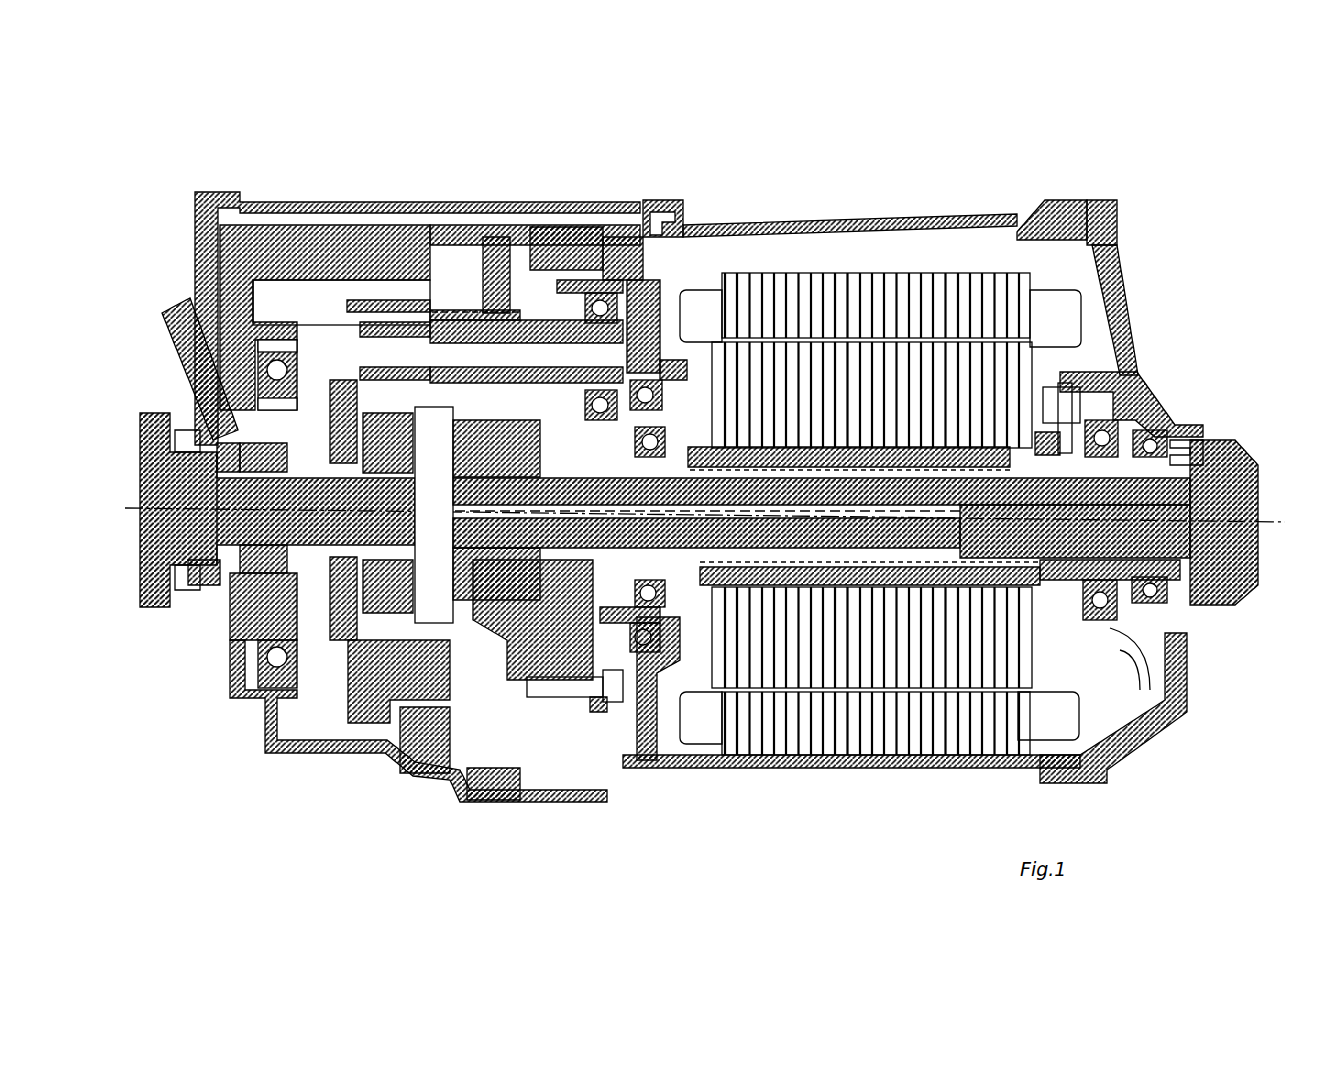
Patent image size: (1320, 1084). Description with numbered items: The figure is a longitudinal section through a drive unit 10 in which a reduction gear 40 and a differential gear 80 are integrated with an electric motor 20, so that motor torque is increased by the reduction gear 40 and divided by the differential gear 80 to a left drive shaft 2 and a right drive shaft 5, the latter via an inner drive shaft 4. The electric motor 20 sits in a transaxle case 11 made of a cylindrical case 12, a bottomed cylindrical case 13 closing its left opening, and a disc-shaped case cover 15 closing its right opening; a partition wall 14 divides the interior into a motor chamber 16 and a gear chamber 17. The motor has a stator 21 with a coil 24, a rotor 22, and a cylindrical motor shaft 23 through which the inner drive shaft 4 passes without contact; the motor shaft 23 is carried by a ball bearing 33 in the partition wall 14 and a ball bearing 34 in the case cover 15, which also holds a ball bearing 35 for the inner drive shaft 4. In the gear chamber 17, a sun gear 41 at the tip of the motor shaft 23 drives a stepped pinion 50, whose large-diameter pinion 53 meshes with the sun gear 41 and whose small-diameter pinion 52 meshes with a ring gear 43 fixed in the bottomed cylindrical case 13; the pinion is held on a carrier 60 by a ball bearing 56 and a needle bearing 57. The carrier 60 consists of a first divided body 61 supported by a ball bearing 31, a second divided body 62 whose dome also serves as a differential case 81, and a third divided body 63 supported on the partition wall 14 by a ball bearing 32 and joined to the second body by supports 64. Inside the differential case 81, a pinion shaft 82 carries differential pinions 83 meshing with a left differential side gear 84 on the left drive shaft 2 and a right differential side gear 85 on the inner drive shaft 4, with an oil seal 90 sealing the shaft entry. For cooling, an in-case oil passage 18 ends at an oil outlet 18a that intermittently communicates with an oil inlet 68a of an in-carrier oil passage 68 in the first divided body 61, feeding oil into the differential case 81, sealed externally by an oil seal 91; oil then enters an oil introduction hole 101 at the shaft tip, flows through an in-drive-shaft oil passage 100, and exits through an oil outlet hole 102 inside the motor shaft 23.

The left drive shaft 2 is at (168, 610).
The inner drive shaft 4 is at (852, 690).
The right drive shaft 5 is at (1230, 608).
The drive unit 10 is at (343, 182).
The transaxle case 11 is at (705, 195).
The cylindrical case 12 is at (745, 226).
The bottomed cylindrical case 13 is at (195, 235).
The partition wall 14 is at (660, 722).
The case cover 15 is at (1120, 292).
The motor chamber 16 is at (769, 269).
The gear chamber 17 is at (304, 312).
The in-case oil passage 18 is at (197, 372).
The oil outlet 18a is at (212, 425).
The electric motor 20 is at (866, 262).
The stator 21 is at (940, 288).
The rotor 22 is at (1015, 355).
The motor shaft 23 is at (972, 450).
The coil 24 is at (1075, 330).
The ball bearing 31 is at (222, 300).
The ball bearing 32 is at (672, 620).
The ball bearing 33 is at (672, 405).
The ball bearing 34 is at (1112, 440).
The ball bearing 35 is at (1175, 438).
The reduction gear 40 is at (333, 315).
The sun gear 41 is at (530, 468).
The ring gear 43 is at (430, 305).
The stepped pinion 50 is at (545, 400).
The small-diameter pinion 52 is at (510, 390).
The large-diameter pinion 53 is at (585, 252).
The ball bearing 56 is at (605, 290).
The needle bearing 57 is at (368, 300).
The carrier 60 is at (325, 675).
The first divided body 61 is at (232, 634).
The second divided body 62 is at (363, 725).
The third divided body 63 is at (622, 722).
The supports 64 is at (512, 702).
The in-carrier oil passage 68 is at (318, 440).
The oil inlet 68a is at (215, 588).
The differential gear 80 is at (545, 295).
The differential case 81 is at (472, 405).
The pinion shaft 82 is at (418, 680).
The differential pinion 83 is at (460, 720).
The left differential side gear 84 is at (258, 688).
The right differential side gear 85 is at (525, 685).
The oil seal 90 is at (580, 700).
The oil seal 91 is at (284, 445).
The in-drive-shaft oil passage 100 is at (772, 690).
The oil introduction hole 101 is at (362, 420).
The oil outlet hole 102 is at (900, 690).